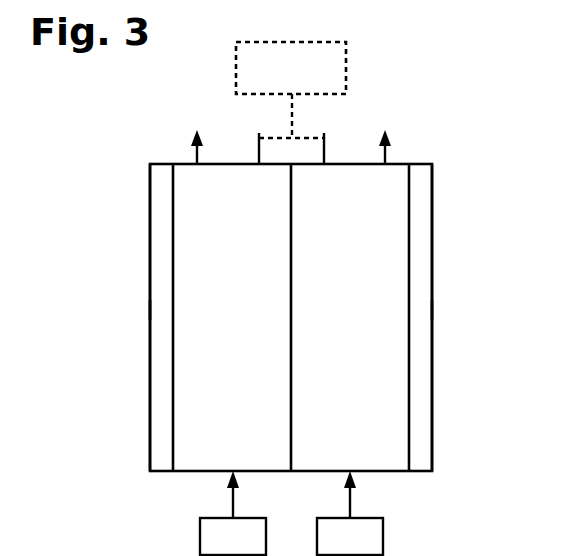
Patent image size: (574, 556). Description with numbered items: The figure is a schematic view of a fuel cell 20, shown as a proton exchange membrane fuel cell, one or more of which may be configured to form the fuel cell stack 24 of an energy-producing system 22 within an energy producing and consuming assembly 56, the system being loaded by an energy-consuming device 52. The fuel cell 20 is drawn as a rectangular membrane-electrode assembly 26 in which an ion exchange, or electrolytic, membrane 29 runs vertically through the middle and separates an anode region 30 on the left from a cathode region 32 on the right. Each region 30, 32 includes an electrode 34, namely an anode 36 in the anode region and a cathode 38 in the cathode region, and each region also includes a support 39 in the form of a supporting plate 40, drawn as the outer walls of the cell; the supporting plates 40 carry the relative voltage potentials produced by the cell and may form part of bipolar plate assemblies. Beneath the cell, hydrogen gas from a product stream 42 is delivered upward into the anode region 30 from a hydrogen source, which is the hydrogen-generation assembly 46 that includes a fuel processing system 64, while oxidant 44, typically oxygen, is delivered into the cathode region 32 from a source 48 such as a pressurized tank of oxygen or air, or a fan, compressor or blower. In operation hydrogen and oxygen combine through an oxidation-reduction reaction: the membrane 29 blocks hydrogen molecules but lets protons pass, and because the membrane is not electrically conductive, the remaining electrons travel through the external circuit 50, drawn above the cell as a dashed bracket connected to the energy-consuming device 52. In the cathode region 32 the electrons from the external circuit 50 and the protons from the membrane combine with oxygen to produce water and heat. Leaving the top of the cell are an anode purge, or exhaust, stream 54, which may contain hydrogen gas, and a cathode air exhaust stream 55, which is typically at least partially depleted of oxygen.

The fuel cell 20 is at (102, 242).
The energy-producing system 22 is at (451, 92).
The fuel cell stack 24 is at (62, 193).
The membrane-electrode assembly 26 is at (292, 480).
The ion exchange membrane 29 is at (291, 282).
The anode region 30 is at (165, 371).
The cathode region 32 is at (418, 392).
The electrode 34 is at (243, 450).
The anode 36 is at (195, 452).
The cathode 38 is at (357, 450).
The support 39 is at (144, 256).
The supporting plate 40 is at (150, 308).
The product stream 42 is at (229, 509).
The oxidant 44 is at (346, 509).
The hydrogen-generation assembly 46 is at (64, 548).
The source of oxygen 48 is at (350, 536).
The external circuit 50 is at (278, 136).
The energy-consuming device 52 is at (346, 68).
The anode purge stream 54 is at (195, 155).
The cathode air exhaust stream 55 is at (387, 155).
The energy producing and consuming assembly 56 is at (116, 96).
The fuel processing system 64 is at (131, 545).